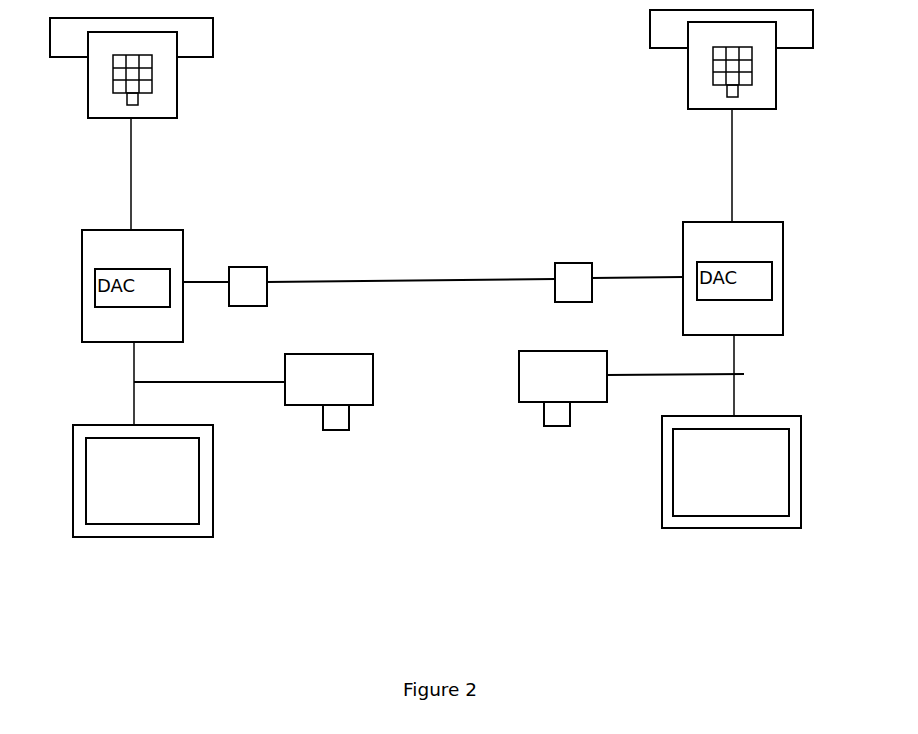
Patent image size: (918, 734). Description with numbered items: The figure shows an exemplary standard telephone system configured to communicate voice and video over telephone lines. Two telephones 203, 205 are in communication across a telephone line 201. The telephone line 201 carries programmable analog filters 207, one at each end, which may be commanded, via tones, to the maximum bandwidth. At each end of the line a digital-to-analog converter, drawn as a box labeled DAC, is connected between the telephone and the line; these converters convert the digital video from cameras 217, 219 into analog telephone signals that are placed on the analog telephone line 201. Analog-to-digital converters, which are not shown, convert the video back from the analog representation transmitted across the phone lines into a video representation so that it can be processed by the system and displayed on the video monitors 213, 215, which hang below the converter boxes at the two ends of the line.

The telephone line 201 is at (470, 292).
The telephone 203 is at (192, 85).
The telephone 205 is at (665, 79).
The programmable analog filter 207 is at (246, 256).
The display monitor 213 is at (143, 481).
The video monitor 215 is at (731, 472).
The camera 217 is at (253, 392).
The camera 219 is at (631, 388).